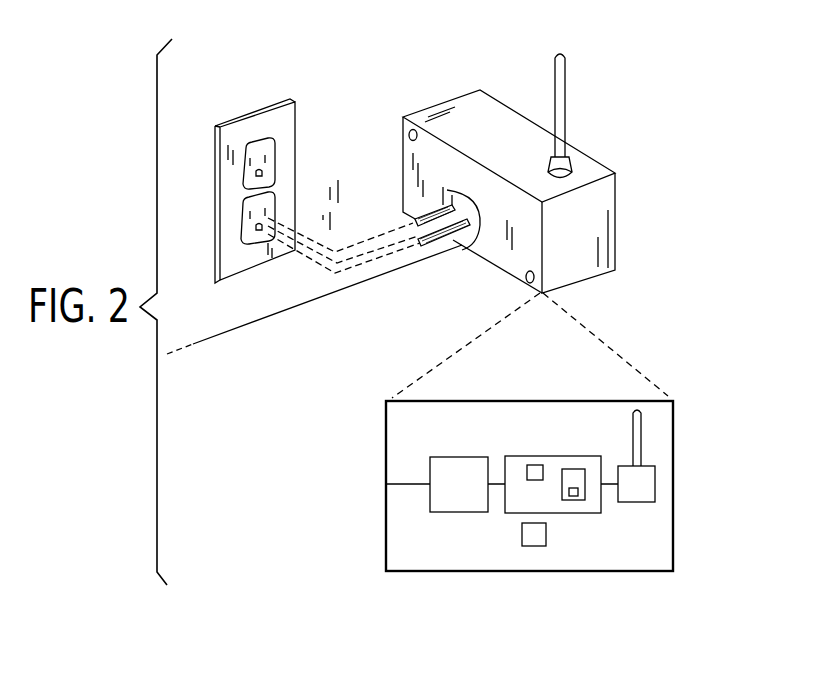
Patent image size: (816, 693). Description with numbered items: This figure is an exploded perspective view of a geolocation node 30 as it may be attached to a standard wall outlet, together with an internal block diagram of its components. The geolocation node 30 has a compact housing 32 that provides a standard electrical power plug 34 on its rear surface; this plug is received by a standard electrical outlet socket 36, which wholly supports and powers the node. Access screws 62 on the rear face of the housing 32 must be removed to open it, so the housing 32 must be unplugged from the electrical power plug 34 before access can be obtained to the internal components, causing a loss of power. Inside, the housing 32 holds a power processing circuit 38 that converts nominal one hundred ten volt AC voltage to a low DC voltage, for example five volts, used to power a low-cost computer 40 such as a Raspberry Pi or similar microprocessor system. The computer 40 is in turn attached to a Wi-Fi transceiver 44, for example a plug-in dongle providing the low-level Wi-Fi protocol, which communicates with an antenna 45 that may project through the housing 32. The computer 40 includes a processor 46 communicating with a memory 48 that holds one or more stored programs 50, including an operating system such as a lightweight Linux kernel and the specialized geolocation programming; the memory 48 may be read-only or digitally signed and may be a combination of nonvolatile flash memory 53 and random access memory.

The geolocation node 30 is at (550, 260).
The housing 32 is at (582, 207).
The electrical power plug 34 is at (482, 237).
The electrical outlet socket 36 is at (233, 250).
The power processing circuit 38 is at (459, 499).
The computer 40 is at (540, 494).
The Wi-Fi transceiver 44 is at (637, 487).
The antenna 45 is at (562, 87).
The processor 46 is at (535, 463).
The memory 48 is at (583, 492).
The stored programs 50 is at (573, 500).
The nonvolatile flash memory 53 is at (525, 533).
The access screws 62 is at (408, 135).